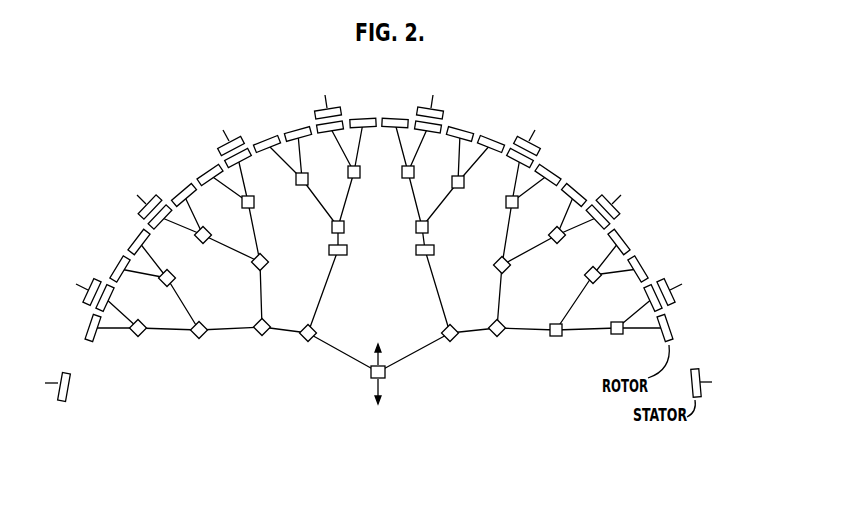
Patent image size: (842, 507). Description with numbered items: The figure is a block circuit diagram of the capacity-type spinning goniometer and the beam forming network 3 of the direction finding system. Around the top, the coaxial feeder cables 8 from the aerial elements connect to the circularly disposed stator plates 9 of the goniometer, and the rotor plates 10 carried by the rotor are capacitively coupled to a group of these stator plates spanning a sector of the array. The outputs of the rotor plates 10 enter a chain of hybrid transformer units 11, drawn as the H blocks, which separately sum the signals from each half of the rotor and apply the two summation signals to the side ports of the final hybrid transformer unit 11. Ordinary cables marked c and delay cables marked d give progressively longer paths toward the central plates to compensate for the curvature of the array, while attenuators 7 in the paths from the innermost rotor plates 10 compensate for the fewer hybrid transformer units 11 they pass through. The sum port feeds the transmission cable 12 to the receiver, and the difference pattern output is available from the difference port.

The beam forming network 3 is at (379, 257).
The attenuators 7 is at (413, 248).
The coaxial feeder cables 8 is at (224, 129).
The stator plates 9 is at (439, 108).
The rotor plates 10 is at (641, 268).
The hybrid transformer units 11 is at (295, 214).
The transmission cable 12 is at (382, 387).